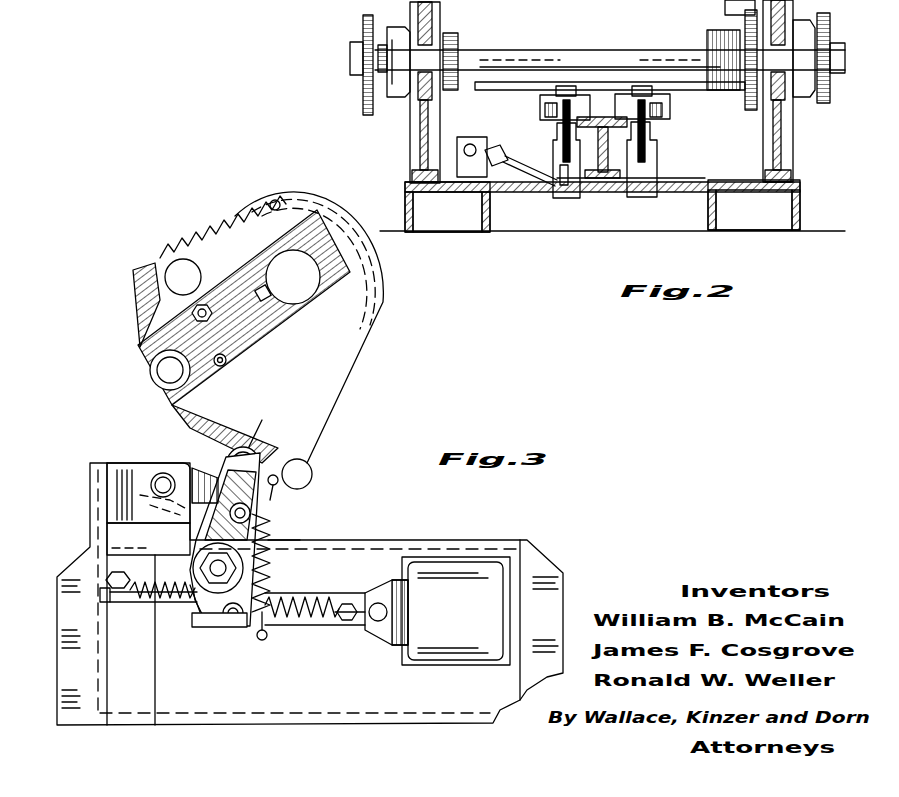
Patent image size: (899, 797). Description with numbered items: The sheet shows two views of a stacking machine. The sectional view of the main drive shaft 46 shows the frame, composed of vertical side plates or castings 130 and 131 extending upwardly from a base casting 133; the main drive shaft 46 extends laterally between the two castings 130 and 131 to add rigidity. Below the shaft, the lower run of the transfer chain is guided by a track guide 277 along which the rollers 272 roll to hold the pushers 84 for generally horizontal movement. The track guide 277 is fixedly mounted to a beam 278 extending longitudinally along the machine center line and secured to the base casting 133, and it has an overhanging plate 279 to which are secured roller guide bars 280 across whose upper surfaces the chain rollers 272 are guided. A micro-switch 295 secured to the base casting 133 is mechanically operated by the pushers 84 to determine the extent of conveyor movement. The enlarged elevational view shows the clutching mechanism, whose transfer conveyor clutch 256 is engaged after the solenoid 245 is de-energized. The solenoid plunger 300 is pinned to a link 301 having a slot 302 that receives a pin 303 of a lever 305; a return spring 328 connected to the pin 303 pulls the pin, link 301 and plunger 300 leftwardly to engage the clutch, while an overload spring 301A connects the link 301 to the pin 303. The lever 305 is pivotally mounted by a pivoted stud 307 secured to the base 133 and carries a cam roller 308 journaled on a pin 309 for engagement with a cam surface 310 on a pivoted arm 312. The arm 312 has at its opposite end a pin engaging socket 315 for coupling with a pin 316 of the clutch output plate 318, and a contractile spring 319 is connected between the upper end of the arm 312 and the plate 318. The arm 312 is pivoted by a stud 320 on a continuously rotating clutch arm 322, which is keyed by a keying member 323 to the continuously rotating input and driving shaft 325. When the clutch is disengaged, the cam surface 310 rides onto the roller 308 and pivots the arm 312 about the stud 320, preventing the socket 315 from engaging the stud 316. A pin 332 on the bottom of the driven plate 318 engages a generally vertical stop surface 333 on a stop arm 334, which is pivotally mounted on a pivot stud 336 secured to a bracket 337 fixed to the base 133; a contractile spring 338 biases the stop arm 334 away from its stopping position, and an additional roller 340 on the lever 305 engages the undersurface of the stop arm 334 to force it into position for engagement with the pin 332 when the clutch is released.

In FIG. 2, the main drive shaft 46 is at (495, 55).
In FIG. 2, the overhanging plate 279 is at (563, 82).
In FIG. 2, the track guide 277 is at (609, 82).
In FIG. 2, the vertical side plate 130 is at (418, 128).
In FIG. 2, the vertical side plate 131 is at (783, 130).
In FIG. 2, the base casting 133 is at (425, 232).
In FIG. 3, the base casting 133 is at (465, 700).
In FIG. 2, the chain rollers 272 is at (545, 95).
In FIG. 2, the roller guide bars 280 is at (548, 117).
In FIG. 2, the pushers 84 is at (568, 198).
In FIG. 2, the beam 278 is at (605, 180).
In FIG. 2, the micro-switch 295 is at (498, 160).
In FIG. 3, the clutch output plate 318 is at (372, 328).
In FIG. 3, the contractile spring 319 is at (200, 228).
In FIG. 3, the pivoted arm 312 is at (150, 320).
In FIG. 3, the pin engaging socket 315 is at (143, 293).
In FIG. 3, the pin 316 is at (183, 268).
In FIG. 3, the input and driving shaft 325 is at (293, 277).
In FIG. 3, the keying member 323 is at (263, 288).
In FIG. 3, the stud 320 is at (158, 368).
In FIG. 3, the clutch arm 322 is at (275, 325).
In FIG. 3, the cam surface 310 is at (195, 433).
In FIG. 3, the pin 309 is at (250, 455).
In FIG. 3, the cam roller 308 is at (230, 462).
In FIG. 3, the lever 305 is at (258, 580).
In FIG. 3, the contractile spring 338 is at (280, 512).
In FIG. 3, the roller 340 is at (270, 535).
In FIG. 3, the stop surface 333 is at (278, 470).
In FIG. 3, the pin 332 is at (305, 477).
In FIG. 3, the transfer conveyor clutch 256 is at (335, 428).
In FIG. 3, the bracket 337 is at (100, 525).
In FIG. 3, the stop arm 334 is at (152, 460).
In FIG. 3, the pivot stud 336 is at (152, 484).
In FIG. 3, the return spring 328 is at (148, 615).
In FIG. 3, the pivoted stud 307 is at (195, 612).
In FIG. 3, the slot 302 is at (222, 628).
In FIG. 3, the pin 303 is at (262, 640).
In FIG. 3, the link 301 is at (295, 620).
In FIG. 3, the overload spring 301A is at (330, 618).
In FIG. 3, the solenoid plunger 300 is at (410, 592).
In FIG. 3, the transfer conveyor clutch solenoid 245 is at (475, 570).